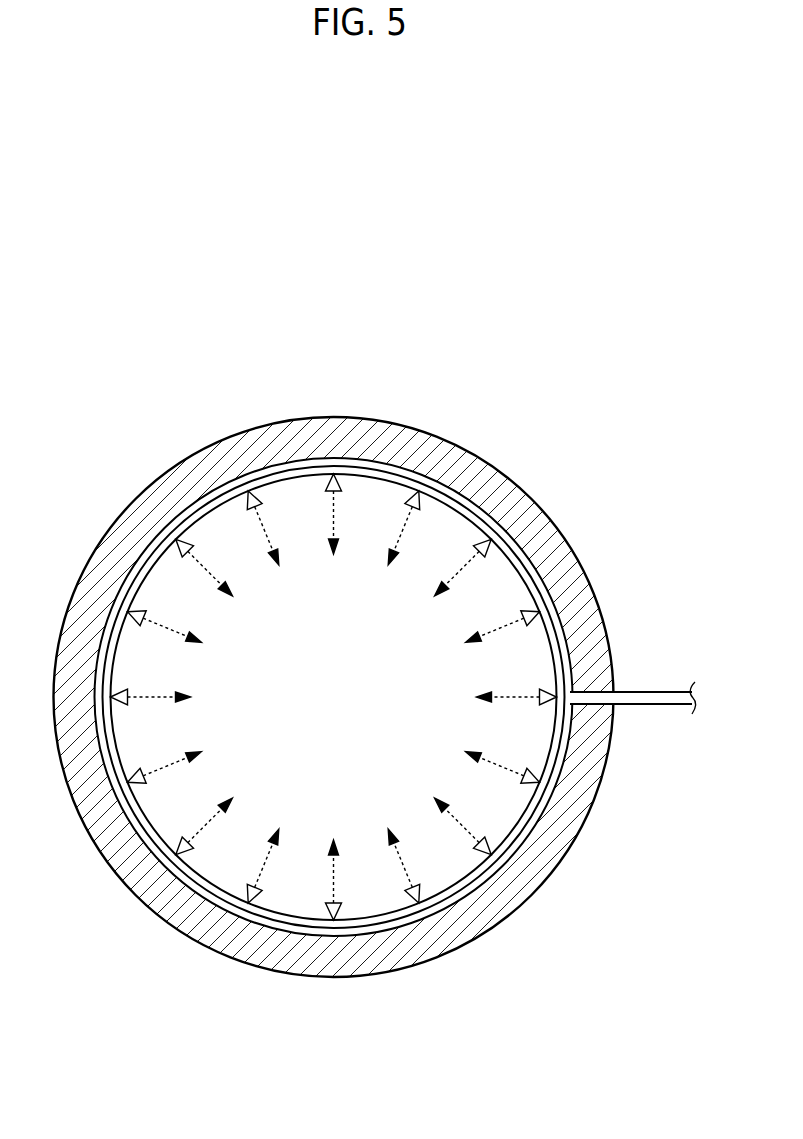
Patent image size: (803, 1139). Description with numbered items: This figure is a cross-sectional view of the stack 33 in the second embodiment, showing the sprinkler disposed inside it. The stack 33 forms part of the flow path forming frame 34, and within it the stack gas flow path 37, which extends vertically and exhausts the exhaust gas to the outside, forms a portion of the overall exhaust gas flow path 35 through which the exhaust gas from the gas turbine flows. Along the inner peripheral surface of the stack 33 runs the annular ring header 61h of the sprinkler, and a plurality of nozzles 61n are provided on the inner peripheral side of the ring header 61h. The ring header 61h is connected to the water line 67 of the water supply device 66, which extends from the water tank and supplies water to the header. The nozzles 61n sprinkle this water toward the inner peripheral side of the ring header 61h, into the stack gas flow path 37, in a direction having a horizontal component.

The stack 33 is at (329, 673).
The flow path forming frame 34 is at (158, 480).
The exhaust gas flow path 35 is at (385, 622).
The stack gas flow path 37 is at (368, 671).
The nozzles 61n is at (172, 848).
The ring header 61h is at (334, 697).
The water supply device 66 is at (312, 785).
The water line 67 is at (655, 692).